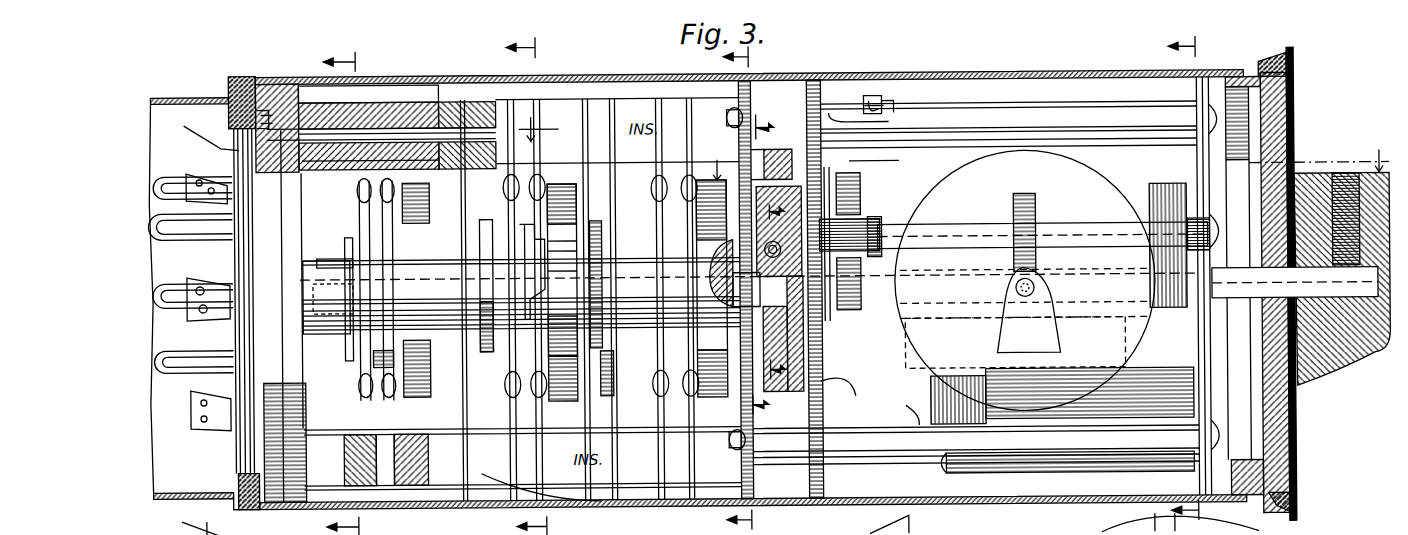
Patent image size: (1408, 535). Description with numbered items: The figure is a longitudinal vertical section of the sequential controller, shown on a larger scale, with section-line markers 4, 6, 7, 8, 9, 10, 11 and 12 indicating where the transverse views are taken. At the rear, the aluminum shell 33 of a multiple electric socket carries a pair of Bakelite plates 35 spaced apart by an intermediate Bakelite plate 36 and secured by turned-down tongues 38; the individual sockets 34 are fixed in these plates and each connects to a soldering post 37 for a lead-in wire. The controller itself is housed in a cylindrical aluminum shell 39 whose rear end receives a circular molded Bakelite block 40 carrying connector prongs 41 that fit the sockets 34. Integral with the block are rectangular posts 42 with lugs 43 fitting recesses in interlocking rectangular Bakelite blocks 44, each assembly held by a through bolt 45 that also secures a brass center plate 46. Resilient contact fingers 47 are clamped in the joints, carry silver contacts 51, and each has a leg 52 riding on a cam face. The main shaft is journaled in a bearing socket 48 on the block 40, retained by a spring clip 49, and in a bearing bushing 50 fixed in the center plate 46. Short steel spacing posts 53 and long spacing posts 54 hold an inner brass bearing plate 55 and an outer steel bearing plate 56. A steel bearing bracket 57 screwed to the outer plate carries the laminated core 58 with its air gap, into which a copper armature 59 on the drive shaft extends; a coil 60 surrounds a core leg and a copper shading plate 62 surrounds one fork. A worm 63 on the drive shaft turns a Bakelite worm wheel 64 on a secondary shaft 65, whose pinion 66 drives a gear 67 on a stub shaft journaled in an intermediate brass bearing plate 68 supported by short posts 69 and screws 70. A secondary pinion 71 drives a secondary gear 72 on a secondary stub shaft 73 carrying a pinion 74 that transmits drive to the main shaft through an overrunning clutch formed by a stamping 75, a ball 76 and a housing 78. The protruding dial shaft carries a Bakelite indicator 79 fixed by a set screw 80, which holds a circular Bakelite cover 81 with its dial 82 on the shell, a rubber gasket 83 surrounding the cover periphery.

The shell 33 is at (175, 94).
The individual sockets 34 is at (209, 311).
The Bakelite plates 35 is at (238, 459).
The intermediate Bakelite plate 36 is at (242, 127).
The soldering post 37 is at (212, 140).
The tongues 38 is at (245, 77).
The cylindrical aluminum shell 39 is at (1062, 75).
The circular molded Bakelite block 40 is at (302, 242).
The connector prongs 41 is at (175, 287).
The rectangular posts 42 is at (325, 426).
The lugs 43 is at (380, 426).
The rectangular Bakelite blocks 44 is at (450, 100).
The through bolt 45 is at (372, 125).
The brass center plate 46 is at (760, 92).
The contact finger 47 is at (680, 226).
The bearing socket 48 is at (328, 296).
The spring clip 49 is at (348, 338).
The bearing bushing 50 is at (722, 397).
The silver contacts 51 is at (445, 178).
The leg 52 is at (520, 226).
The short steel spacing posts 53 is at (725, 115).
The long spacing posts 54 is at (975, 110).
The inner brass bearing plate 55 is at (832, 110).
The outer bearing plate 56 is at (1198, 94).
The steel bearing bracket 57 is at (1172, 187).
The laminated core 58 is at (998, 387).
The copper armature 59 is at (935, 347).
The coil 60 is at (930, 394).
The copper shading plate 62 is at (1092, 475).
The worm 63 is at (1060, 273).
The worm wheel 64 is at (1036, 203).
The secondary shaft 65 is at (900, 226).
The pinion 66 is at (875, 217).
The gear 67 is at (842, 314).
The intermediate brass bearing plate 68 is at (888, 107).
The short posts 69 is at (848, 110).
The screws 70 is at (895, 102).
The secondary pinion 71 is at (808, 259).
The secondary gear 72 is at (878, 114).
The secondary stub shaft 73 is at (900, 162).
The pinion 74 is at (780, 150).
The stamping 75 is at (768, 270).
The ball 76 is at (735, 262).
The housing 78 is at (885, 413).
The Bakelite indicator 79 is at (1310, 177).
The set screw 80 is at (1348, 178).
The circular molded Bakelite cover 81 is at (1295, 80).
The dial 82 is at (1290, 113).
The rubber gasket 83 is at (1270, 65).
The section line 4 is at (1048, 155).
The section line 6 is at (350, 293).
The section line 7 is at (746, 287).
The section line 8 is at (413, 141).
The section line 9 is at (535, 285).
The section line 10 is at (1197, 279).
The section line 11 is at (776, 264).
The section line 12 is at (787, 292).